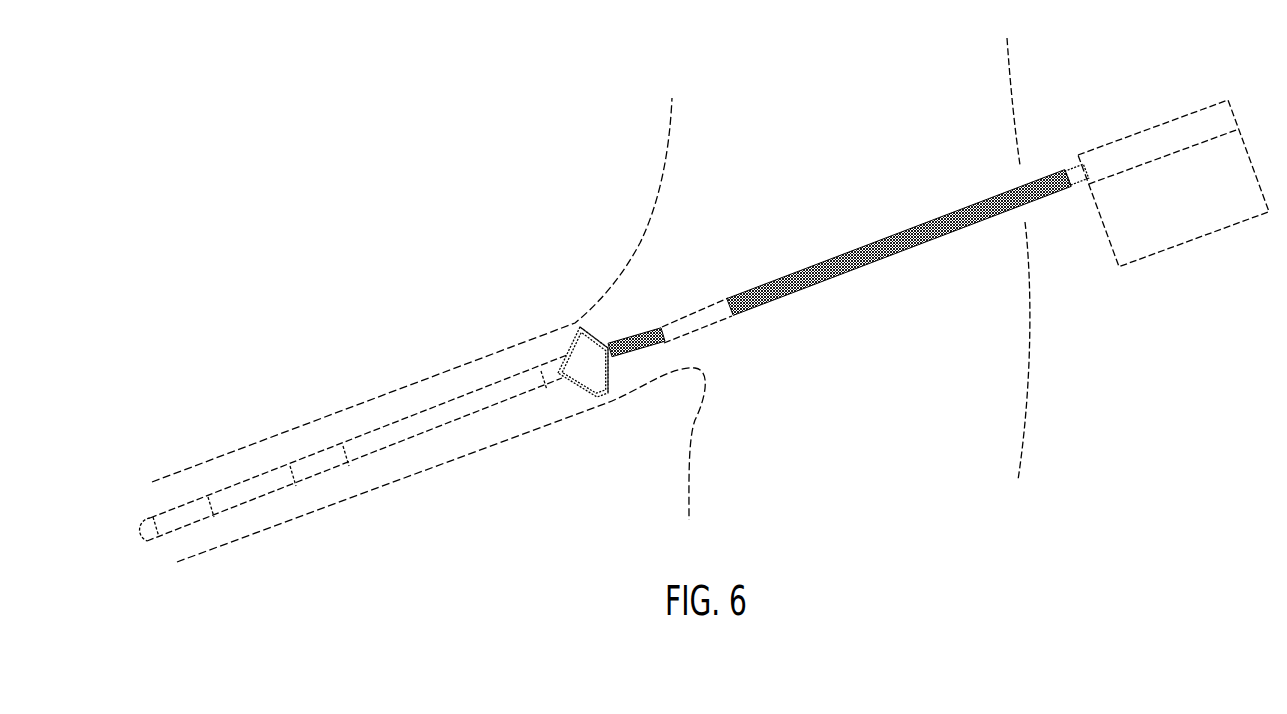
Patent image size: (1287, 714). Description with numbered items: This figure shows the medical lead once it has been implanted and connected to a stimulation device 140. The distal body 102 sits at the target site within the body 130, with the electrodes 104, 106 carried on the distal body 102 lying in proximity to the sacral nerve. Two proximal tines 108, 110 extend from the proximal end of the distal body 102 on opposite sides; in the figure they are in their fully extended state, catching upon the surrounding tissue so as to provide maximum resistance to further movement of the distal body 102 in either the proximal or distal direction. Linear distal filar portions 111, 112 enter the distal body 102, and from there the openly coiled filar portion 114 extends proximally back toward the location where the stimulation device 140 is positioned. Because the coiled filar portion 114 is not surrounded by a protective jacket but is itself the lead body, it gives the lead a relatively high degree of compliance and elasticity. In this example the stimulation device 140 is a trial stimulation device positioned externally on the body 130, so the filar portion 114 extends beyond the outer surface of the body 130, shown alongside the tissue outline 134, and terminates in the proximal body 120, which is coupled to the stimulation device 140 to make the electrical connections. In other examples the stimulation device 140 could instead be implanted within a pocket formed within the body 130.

The distal body 102 is at (267, 497).
The electrode 104 is at (193, 518).
The electrode 106 is at (327, 468).
The proximal tine 108 is at (567, 352).
The proximal tine 110 is at (577, 385).
The distal filar portion 111 is at (595, 334).
The distal filar portion 112 is at (611, 371).
The openly coiled filar portion 114 is at (648, 331).
The proximal body 120 is at (1080, 182).
The body 130 is at (1005, 83).
The body tissue outline 134 is at (468, 366).
The stimulation device 140 is at (1190, 122).